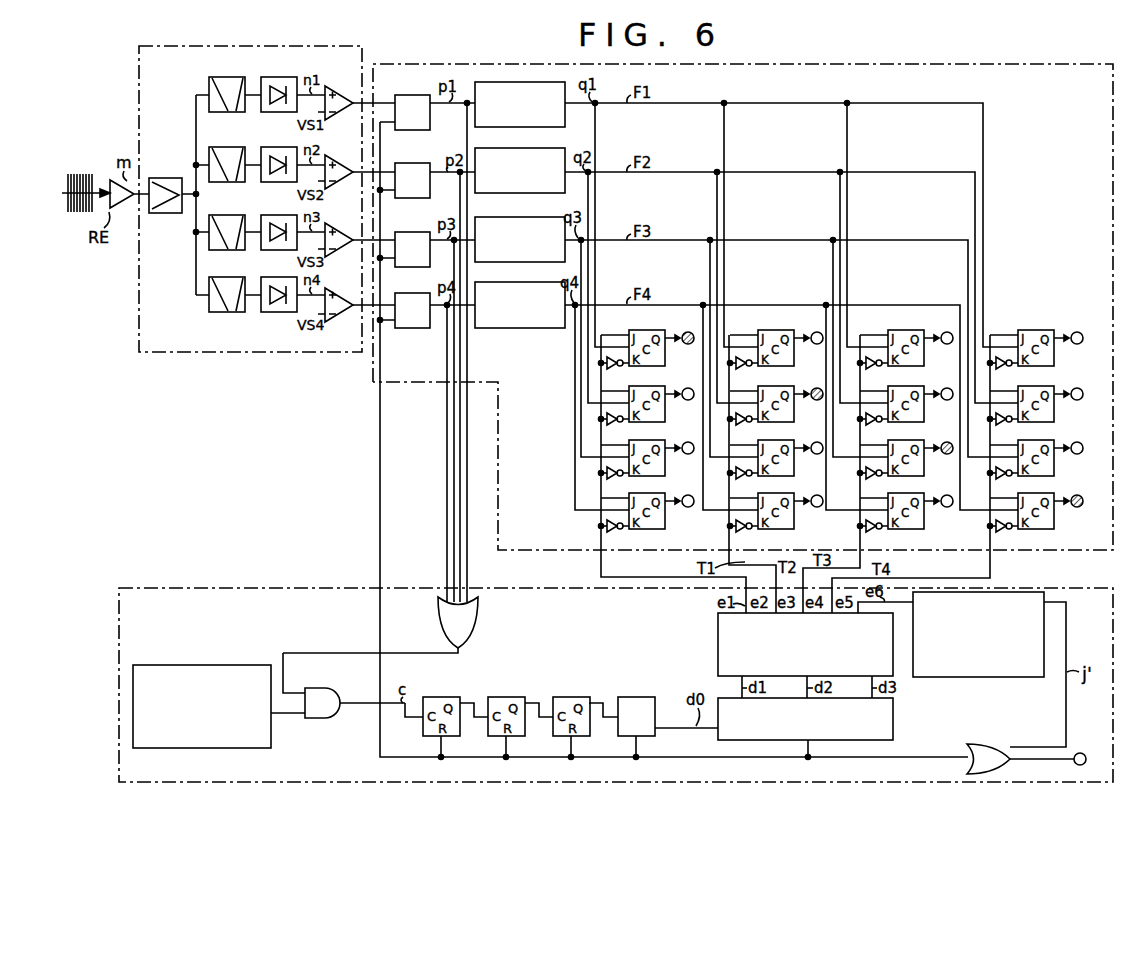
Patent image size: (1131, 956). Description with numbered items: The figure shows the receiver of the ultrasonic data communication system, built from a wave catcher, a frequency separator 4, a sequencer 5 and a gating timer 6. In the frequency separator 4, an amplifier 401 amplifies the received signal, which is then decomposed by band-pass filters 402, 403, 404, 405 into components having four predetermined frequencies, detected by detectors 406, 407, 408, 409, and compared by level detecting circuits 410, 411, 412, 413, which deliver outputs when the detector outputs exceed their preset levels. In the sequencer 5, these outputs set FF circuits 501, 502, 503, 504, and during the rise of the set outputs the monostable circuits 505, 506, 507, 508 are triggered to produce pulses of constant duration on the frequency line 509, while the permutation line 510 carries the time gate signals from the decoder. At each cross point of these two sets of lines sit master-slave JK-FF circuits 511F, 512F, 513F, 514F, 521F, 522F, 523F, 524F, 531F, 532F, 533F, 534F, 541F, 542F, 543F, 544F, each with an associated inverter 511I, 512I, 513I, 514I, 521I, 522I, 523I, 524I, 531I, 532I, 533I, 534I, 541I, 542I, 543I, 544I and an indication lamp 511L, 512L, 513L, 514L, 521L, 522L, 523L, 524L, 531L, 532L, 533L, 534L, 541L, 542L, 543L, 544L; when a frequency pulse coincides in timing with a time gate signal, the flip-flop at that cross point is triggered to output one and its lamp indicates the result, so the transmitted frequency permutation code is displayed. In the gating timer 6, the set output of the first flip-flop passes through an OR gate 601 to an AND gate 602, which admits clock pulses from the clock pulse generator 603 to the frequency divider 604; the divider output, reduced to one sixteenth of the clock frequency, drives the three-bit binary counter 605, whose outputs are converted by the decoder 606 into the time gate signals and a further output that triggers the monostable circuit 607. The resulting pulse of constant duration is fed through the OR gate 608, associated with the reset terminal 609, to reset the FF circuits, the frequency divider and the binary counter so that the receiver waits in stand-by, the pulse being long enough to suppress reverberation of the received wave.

The frequency separator 4 is at (190, 352).
The sequencer 5 is at (1060, 550).
The gating timer 6 is at (222, 588).
The amplifier 401 is at (172, 177).
The band-pass filter 402 is at (240, 79).
The band-pass filter 403 is at (240, 146).
The band-pass filter 404 is at (240, 214).
The band-pass filter 405 is at (240, 276).
The detector 406 is at (271, 80).
The detector 407 is at (273, 146).
The detector 408 is at (273, 214).
The detector 409 is at (291, 276).
The level detecting circuit 410 is at (338, 119).
The level detecting circuit 411 is at (338, 188).
The level detecting circuit 412 is at (338, 256).
The level detecting circuit 413 is at (338, 320).
The FF circuit 501 is at (412, 131).
The FF circuit 502 is at (412, 199).
The FF circuit 503 is at (412, 268).
The FF circuit 504 is at (412, 329).
The monostable circuit 505 is at (515, 128).
The monostable circuit 506 is at (515, 194).
The monostable circuit 507 is at (515, 263).
The monostable circuit 508 is at (515, 329).
The frequency line 509 is at (656, 92).
The permutation line 510 is at (850, 560).
The JK-FF circuit 511F is at (639, 330).
The indication lamp 511L is at (687, 344).
The inverter 511I is at (611, 370).
The JK-FF circuit 512F is at (639, 386).
The indication lamp 512L is at (687, 400).
The inverter 512I is at (611, 426).
The JK-FF circuit 513F is at (639, 440).
The indication lamp 513L is at (687, 454).
The inverter 513I is at (611, 480).
The JK-FF circuit 514F is at (639, 493).
The indication lamp 514L is at (687, 507).
The inverter 514I is at (611, 533).
The JK-FF circuit 521F is at (768, 330).
The indication lamp 521L is at (816, 344).
The inverter 521I is at (740, 370).
The JK-FF circuit 522F is at (768, 386).
The indication lamp 522L is at (816, 400).
The inverter 522I is at (740, 426).
The JK-FF circuit 523F is at (768, 440).
The indication lamp 523L is at (816, 454).
The inverter 523I is at (740, 480).
The JK-FF circuit 524F is at (768, 493).
The indication lamp 524L is at (816, 507).
The inverter 524I is at (740, 533).
The JK-FF circuit 531F is at (898, 330).
The indication lamp 531L is at (946, 344).
The inverter 531I is at (870, 370).
The JK-FF circuit 532F is at (898, 386).
The indication lamp 532L is at (946, 400).
The inverter 532I is at (870, 426).
The JK-FF circuit 533F is at (898, 440).
The indication lamp 533L is at (946, 454).
The inverter 533I is at (870, 480).
The JK-FF circuit 534F is at (898, 493).
The indication lamp 534L is at (946, 507).
The inverter 534I is at (870, 533).
The JK-FF circuit 541F is at (1028, 330).
The indication lamp 541L is at (1076, 344).
The inverter 541I is at (1000, 370).
The JK-FF circuit 542F is at (1028, 386).
The indication lamp 542L is at (1076, 400).
The inverter 542I is at (1000, 426).
The JK-FF circuit 543F is at (1028, 440).
The indication lamp 543L is at (1076, 454).
The inverter 543I is at (1000, 480).
The JK-FF circuit 544F is at (1028, 493).
The indication lamp 544L is at (1076, 507).
The inverter 544I is at (1000, 533).
The OR gate 601 is at (478, 620).
The AND gate 602 is at (322, 718).
The clock pulse generator 603 is at (172, 749).
The frequency divider 604 is at (585, 672).
The three-bit binary counter 605 is at (893, 720).
The decoder 606 is at (718, 648).
The monostable circuit 607 is at (963, 678).
The OR gate 608 is at (968, 768).
The reset terminal 609 is at (1082, 747).